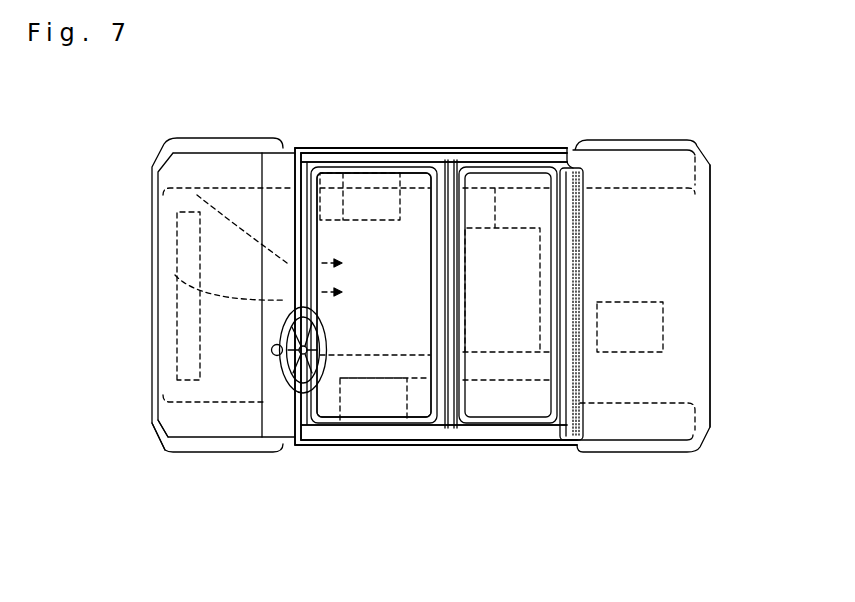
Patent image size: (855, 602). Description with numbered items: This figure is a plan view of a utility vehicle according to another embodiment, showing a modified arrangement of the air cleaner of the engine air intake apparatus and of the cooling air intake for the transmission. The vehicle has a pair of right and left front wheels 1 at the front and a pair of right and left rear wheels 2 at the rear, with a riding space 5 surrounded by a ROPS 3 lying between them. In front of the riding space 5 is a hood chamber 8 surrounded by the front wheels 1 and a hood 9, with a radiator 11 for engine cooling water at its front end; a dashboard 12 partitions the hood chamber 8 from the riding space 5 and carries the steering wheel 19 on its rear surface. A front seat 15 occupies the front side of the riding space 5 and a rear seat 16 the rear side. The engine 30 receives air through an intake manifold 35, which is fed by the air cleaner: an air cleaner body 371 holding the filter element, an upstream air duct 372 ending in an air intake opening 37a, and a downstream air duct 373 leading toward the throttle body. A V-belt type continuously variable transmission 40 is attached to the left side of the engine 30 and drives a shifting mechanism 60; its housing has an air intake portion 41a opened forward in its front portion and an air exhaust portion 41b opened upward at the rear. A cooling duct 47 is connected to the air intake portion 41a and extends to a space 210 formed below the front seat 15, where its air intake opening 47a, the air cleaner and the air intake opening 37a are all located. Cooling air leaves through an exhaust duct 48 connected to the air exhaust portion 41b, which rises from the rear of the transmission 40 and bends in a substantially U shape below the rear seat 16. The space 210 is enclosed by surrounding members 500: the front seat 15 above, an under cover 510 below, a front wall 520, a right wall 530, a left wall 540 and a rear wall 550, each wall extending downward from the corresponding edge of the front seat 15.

The front wheels 1 is at (222, 137).
The rear wheels 2 is at (640, 139).
The ROPS 3 is at (512, 150).
The riding space 5 is at (442, 155).
The hood chamber 8 is at (152, 428).
The hood 9 is at (152, 427).
The radiator 11 is at (153, 393).
The dashboard 12 is at (266, 440).
The front seat 15 is at (416, 150).
The rear seat 16 is at (575, 165).
The steering wheel 19 is at (285, 393).
The engine 30 is at (503, 150).
The intake manifold 35 is at (587, 253).
The air intake opening 37a is at (337, 165).
The V-belt type continuously variable transmission 40 is at (510, 445).
The air intake portion 41a is at (461, 443).
The air exhaust portion 41b is at (590, 380).
The cooling duct 47 is at (365, 437).
The air intake opening 47a is at (338, 437).
The exhaust duct 48 is at (587, 274).
The shifting mechanism 60 is at (663, 322).
The space 210 is at (175, 275).
The air cleaner body 371 is at (382, 150).
The upstream air duct 372 is at (295, 165).
The downstream air duct 373 is at (488, 160).
The surrounding members 500 is at (433, 563).
The under cover 510 is at (152, 193).
The front wall 520 is at (295, 210).
The right wall 530 is at (397, 150).
The left wall 540 is at (395, 445).
The rear wall 550 is at (416, 440).